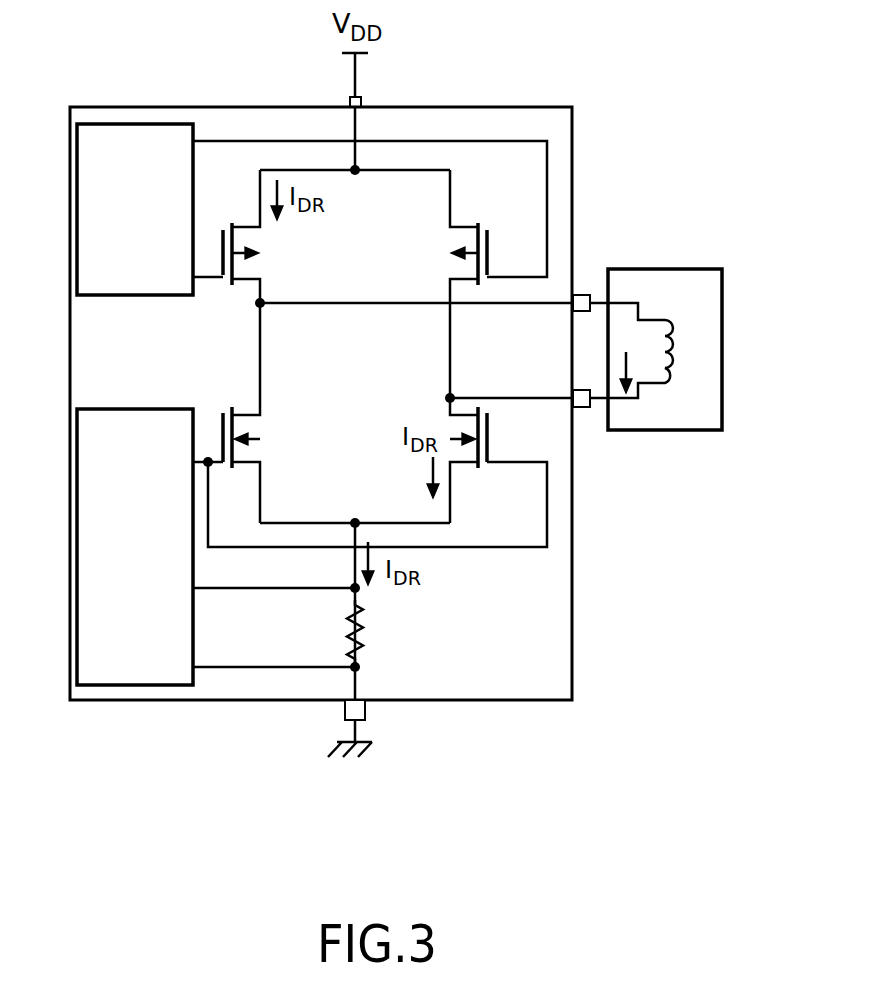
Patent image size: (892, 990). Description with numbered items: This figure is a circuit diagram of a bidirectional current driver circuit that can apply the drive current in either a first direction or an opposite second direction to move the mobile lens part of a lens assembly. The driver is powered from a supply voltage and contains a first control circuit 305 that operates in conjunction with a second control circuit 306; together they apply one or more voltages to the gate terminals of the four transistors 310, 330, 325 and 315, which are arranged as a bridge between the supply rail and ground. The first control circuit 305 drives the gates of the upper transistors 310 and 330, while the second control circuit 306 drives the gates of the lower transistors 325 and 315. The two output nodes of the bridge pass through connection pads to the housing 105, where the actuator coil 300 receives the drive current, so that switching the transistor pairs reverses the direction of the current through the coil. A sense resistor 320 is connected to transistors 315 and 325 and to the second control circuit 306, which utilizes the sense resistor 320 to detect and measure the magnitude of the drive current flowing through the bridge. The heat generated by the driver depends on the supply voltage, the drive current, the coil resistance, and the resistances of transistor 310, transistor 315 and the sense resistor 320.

The first control circuit 305 is at (135, 123).
The second control circuit 306 is at (122, 408).
The transistor 310 is at (223, 252).
The transistor 330 is at (488, 245).
The transistor 325 is at (224, 425).
The transistor 315 is at (490, 424).
The sense resistor 320 is at (363, 632).
The housing 105 is at (722, 285).
The coil 300 is at (675, 326).